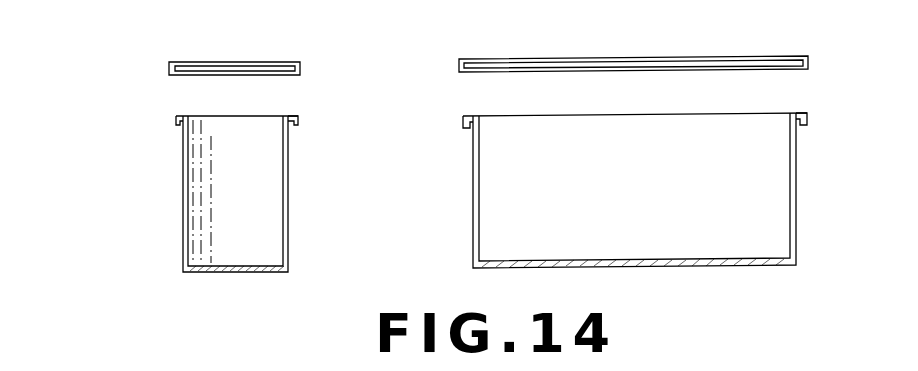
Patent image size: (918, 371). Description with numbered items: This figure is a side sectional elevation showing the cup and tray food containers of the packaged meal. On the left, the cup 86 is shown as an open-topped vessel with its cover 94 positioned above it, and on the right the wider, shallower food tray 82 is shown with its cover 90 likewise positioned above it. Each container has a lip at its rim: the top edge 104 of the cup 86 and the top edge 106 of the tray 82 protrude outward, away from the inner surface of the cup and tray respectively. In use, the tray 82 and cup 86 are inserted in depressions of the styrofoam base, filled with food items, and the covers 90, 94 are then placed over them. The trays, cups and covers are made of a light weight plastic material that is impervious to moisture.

The food tray 82 is at (473, 193).
The cup 86 is at (184, 197).
The cover 90 is at (459, 60).
The cover 94 is at (169, 62).
The top edge of the cup 104 is at (176, 117).
The top edge of the tray 106 is at (463, 116).